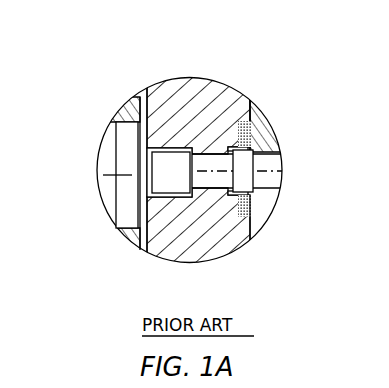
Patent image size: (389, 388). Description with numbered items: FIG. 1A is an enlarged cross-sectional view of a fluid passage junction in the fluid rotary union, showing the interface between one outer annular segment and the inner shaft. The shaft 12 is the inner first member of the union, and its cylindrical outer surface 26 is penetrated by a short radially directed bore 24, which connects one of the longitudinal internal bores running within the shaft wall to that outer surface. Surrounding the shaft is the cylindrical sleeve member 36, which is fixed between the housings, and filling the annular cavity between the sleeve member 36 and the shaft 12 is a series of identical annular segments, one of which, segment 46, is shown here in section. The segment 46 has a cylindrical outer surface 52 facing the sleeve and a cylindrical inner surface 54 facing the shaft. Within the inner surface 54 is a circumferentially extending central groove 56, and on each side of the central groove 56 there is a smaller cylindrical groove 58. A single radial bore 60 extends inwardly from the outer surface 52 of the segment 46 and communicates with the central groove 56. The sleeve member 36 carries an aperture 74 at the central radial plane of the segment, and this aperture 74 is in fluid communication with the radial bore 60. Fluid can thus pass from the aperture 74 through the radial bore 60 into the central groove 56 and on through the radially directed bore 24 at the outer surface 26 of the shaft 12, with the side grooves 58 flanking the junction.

The shaft 12 is at (251, 139).
The radially directed bore 24 is at (288, 165).
The cylindrical outer surface 26 is at (256, 228).
The cylindrical sleeve member 36 is at (124, 110).
The annular segment 46 is at (211, 81).
The cylindrical outer surface 52 is at (130, 240).
The cylindrical inner surface 54 is at (262, 103).
The central groove 56 is at (260, 177).
The cylindrical groove 58 is at (252, 131).
The radial bore 60 is at (150, 170).
The aperture 74 is at (112, 144).